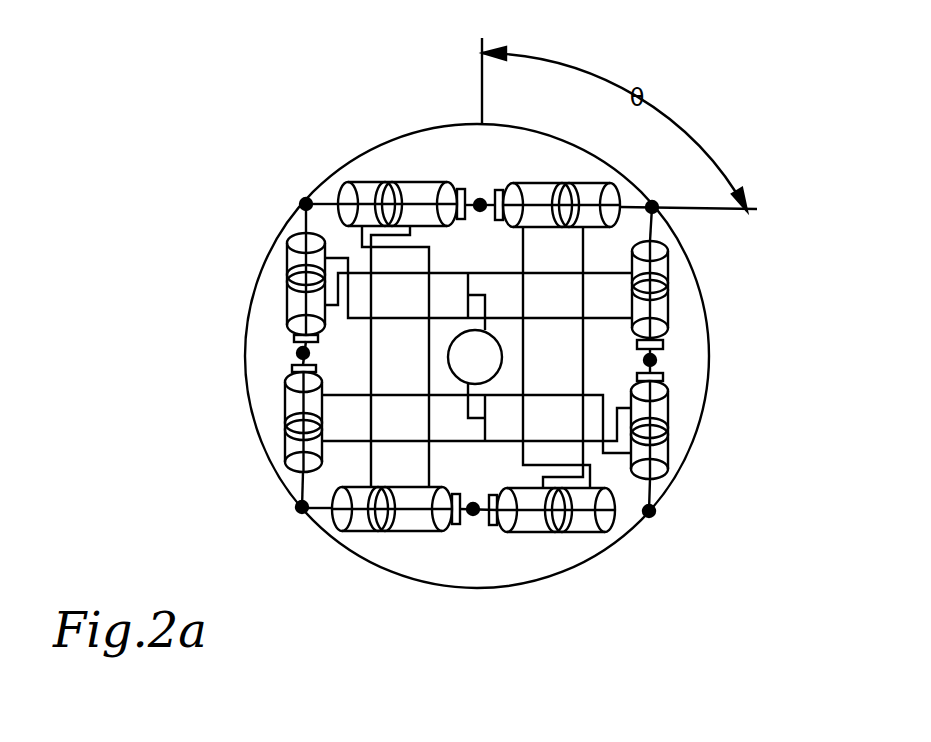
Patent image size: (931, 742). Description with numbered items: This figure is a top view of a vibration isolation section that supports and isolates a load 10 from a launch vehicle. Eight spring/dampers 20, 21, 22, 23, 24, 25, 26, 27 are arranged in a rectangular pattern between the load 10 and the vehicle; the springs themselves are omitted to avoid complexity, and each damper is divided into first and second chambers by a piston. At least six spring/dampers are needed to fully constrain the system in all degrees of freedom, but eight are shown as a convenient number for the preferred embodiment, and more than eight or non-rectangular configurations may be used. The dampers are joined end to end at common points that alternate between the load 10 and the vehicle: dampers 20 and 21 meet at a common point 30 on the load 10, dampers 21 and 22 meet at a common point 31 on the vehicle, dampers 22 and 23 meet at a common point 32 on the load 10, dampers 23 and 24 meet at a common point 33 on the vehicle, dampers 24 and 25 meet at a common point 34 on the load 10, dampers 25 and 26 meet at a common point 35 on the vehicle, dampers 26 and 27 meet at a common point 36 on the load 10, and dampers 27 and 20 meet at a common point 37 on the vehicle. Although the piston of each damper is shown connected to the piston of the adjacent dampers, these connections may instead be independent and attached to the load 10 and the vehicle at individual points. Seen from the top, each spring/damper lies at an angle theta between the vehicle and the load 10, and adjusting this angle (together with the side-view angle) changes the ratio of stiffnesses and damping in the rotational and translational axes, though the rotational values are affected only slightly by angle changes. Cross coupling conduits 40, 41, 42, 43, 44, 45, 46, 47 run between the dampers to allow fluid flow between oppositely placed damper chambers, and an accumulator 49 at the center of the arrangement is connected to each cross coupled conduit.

The load 10 is at (708, 322).
The spring/damper 20 is at (400, 531).
The spring/damper 21 is at (285, 413).
The spring/damper 22 is at (287, 293).
The spring/damper 23 is at (413, 181).
The spring/damper 24 is at (553, 183).
The spring/damper 25 is at (668, 298).
The spring/damper 26 is at (668, 430).
The spring/damper 27 is at (560, 533).
The common point 30 is at (300, 509).
The common point 31 is at (300, 353).
The common point 32 is at (306, 200).
The common point 33 is at (481, 200).
The common point 34 is at (653, 204).
The common point 35 is at (655, 361).
The common point 36 is at (650, 514).
The common point 37 is at (473, 513).
The cross coupling conduit 40 is at (430, 463).
The cross coupling conduit 41 is at (370, 465).
The cross coupling conduit 42 is at (343, 439).
The cross coupling conduit 43 is at (342, 393).
The cross coupling conduit 44 is at (395, 317).
The cross coupling conduit 45 is at (613, 274).
The cross coupling conduit 46 is at (523, 253).
The cross coupling conduit 47 is at (584, 268).
The accumulator 49 is at (502, 358).